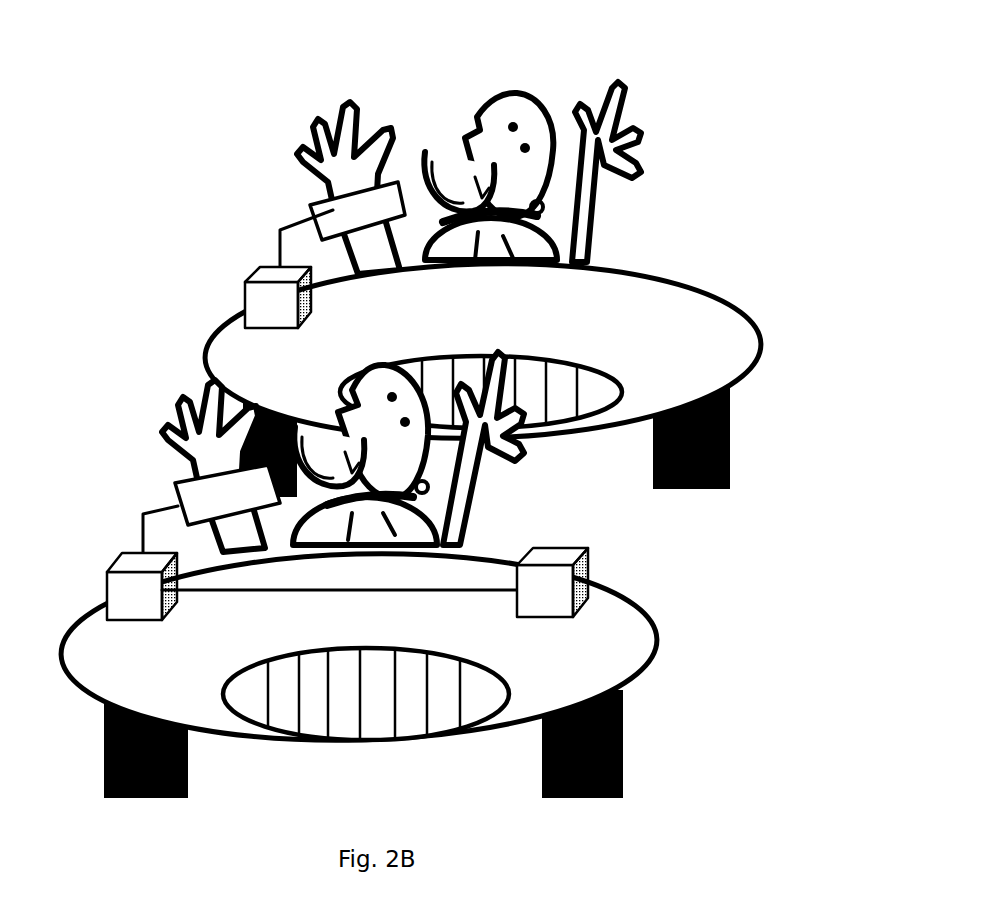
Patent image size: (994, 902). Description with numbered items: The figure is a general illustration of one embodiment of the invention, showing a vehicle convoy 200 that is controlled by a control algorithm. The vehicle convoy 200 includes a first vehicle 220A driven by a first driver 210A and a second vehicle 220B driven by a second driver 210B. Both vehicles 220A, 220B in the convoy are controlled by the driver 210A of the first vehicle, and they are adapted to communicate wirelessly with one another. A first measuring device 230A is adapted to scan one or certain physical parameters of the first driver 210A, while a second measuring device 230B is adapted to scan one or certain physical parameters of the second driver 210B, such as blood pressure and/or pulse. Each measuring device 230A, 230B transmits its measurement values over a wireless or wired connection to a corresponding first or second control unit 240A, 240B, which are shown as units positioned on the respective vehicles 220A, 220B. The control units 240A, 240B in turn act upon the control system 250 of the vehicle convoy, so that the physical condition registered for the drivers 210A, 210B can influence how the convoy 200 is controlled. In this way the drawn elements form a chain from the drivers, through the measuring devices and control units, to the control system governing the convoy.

The vehicle convoy 200 is at (707, 77).
The first driver 210A is at (362, 388).
The second driver 210B is at (502, 92).
The first vehicle 220A is at (622, 652).
The second vehicle 220B is at (728, 357).
The first measuring device 230A is at (203, 482).
The second measuring device 230B is at (337, 212).
The first control unit 240A is at (132, 562).
The second control unit 240B is at (268, 274).
The control system 250 is at (553, 558).